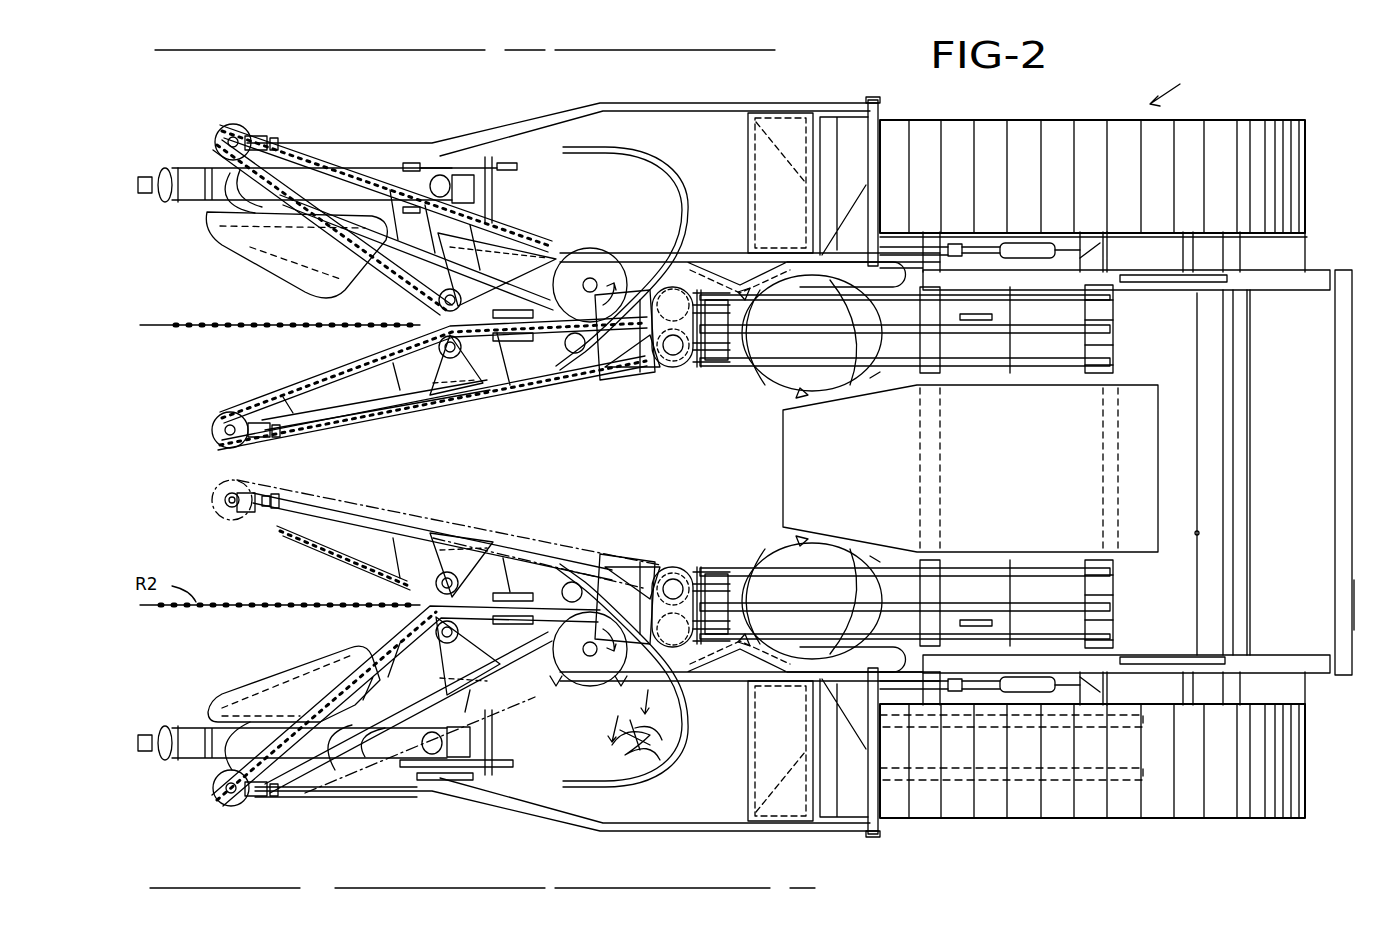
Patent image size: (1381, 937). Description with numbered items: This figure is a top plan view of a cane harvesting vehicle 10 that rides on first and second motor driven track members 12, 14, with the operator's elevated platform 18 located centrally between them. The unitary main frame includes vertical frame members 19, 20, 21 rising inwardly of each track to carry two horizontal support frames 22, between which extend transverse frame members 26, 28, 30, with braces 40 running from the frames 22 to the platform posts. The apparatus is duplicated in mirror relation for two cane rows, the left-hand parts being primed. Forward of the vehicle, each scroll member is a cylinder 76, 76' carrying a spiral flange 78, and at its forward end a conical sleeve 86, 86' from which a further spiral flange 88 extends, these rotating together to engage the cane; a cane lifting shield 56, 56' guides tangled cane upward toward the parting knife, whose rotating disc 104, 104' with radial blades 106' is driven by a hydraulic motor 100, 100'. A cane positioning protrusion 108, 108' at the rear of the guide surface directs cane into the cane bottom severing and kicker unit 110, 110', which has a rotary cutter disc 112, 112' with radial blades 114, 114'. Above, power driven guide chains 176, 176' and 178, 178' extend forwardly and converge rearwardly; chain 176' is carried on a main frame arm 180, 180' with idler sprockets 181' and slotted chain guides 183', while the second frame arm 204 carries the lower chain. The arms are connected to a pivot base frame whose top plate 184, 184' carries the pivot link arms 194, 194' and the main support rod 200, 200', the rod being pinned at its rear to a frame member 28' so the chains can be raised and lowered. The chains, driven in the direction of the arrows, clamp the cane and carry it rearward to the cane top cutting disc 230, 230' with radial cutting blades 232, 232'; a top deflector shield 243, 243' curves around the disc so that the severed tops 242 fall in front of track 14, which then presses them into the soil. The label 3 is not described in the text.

The vehicle 10 is at (1179, 90).
The track member 12 is at (1300, 187).
The track member 14 is at (1293, 768).
The elevated platform 18 is at (970, 468).
The vertical frame member 19 is at (952, 240).
The vertical frame member 20 is at (1108, 251).
The vertical frame member 21 is at (1212, 252).
The horizontal support frame 22 is at (1332, 278).
The transverse frame member 26 is at (932, 353).
The transverse frame member 28 is at (1132, 329).
The frame member 28' is at (1083, 580).
The transverse frame member 30 is at (1203, 597).
The frame member 3 is at (1347, 608).
The brace 40 is at (1160, 284).
The cane lifting shield 56 is at (296, 255).
The cane lifting shield 56' is at (294, 684).
The cylinder 76 is at (312, 170).
The cylinder 76' is at (304, 769).
The spiral flange 78 is at (246, 206).
The conical sleeve 86 is at (152, 200).
The conical sleeve 86' is at (150, 760).
The spiral flange 88 is at (146, 176).
The hydraulic motor 100 is at (505, 191).
The hydraulic motor 100' is at (493, 742).
The rotating disc 104 is at (481, 188).
The rotating disc 104' is at (482, 782).
The radial blade 106' is at (491, 456).
The cane positioning protrusion 108 is at (750, 253).
The cane positioning protrusion 108' is at (750, 679).
The cane bottom severing and kicker unit 110 is at (825, 350).
The cane bottom severing and kicker unit 110' is at (782, 599).
The cutter disc 112 is at (732, 342).
The cutter disc 112' is at (754, 579).
The radial blade 114 is at (809, 352).
The radial blade 114' is at (840, 581).
The guide chain 176 is at (384, 210).
The guide chain 176' is at (406, 706).
The guide chain 178 is at (429, 383).
The guide chain 178' is at (361, 538).
The main frame arm 180 is at (416, 252).
The main frame arm 180' is at (432, 531).
The idler sprocket 181' is at (447, 523).
The chain guide 183' is at (452, 606).
The top plate 184 is at (667, 342).
The top plate 184' is at (667, 586).
The pivot link arm 194 is at (998, 348).
The pivot link arm 194' is at (993, 590).
The main support rod 200 is at (905, 316).
The main support rod 200' is at (905, 623).
The second frame arm 204 is at (470, 399).
The cane top cutting disc 230 is at (596, 267).
The cane top cutting disc 230' is at (585, 699).
The radial cutting blade 232 is at (552, 348).
The radial cutting blade 232' is at (605, 662).
The severed tops 242 is at (650, 751).
The top deflector shield 243 is at (639, 258).
The top deflector shield 243' is at (629, 684).